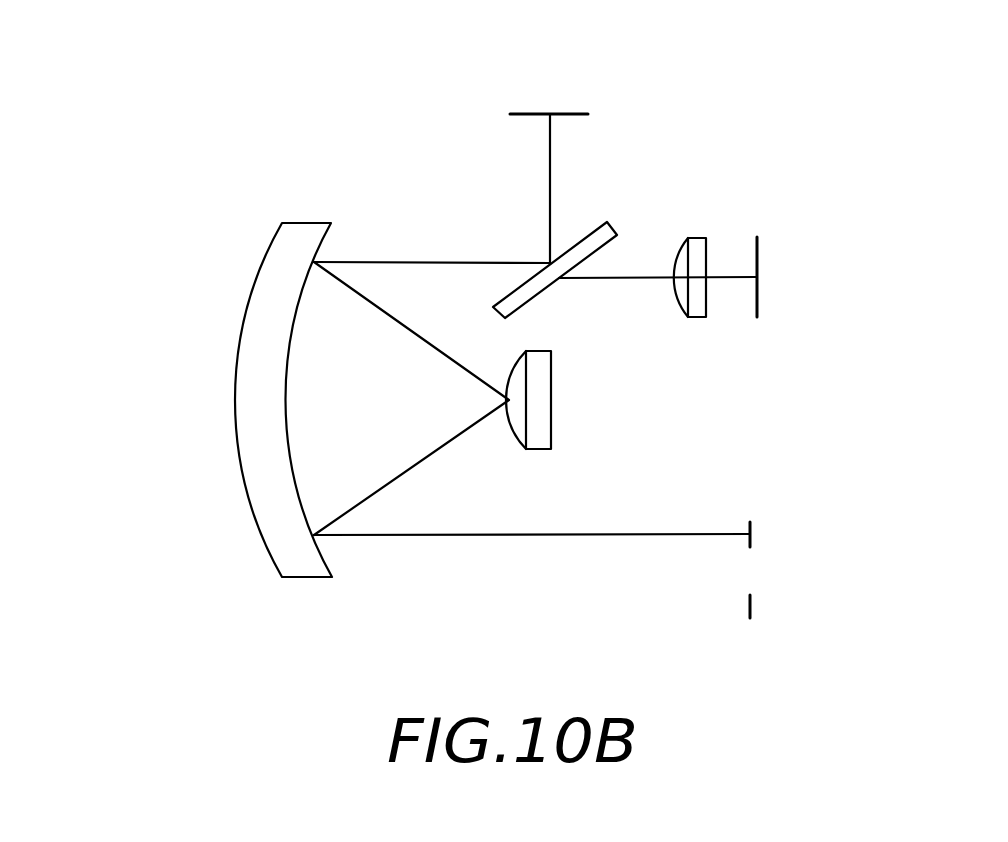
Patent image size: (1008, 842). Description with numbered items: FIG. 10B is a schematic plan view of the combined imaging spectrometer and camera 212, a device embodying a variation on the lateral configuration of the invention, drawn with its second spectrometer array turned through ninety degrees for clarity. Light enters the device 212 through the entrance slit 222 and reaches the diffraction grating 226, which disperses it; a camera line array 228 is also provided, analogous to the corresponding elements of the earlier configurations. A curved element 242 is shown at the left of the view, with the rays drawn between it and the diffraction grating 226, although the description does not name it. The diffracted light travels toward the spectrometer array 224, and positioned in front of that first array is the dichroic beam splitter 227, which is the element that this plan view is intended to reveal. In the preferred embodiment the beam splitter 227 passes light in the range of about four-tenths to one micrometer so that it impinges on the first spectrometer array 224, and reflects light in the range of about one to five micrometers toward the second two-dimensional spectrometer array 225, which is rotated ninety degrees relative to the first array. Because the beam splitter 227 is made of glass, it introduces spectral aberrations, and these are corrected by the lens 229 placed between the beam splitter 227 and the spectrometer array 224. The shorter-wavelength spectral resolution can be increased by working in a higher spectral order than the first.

The combined imaging spectrometer and camera 212 is at (184, 198).
The curved mirror 242 is at (235, 394).
The second two-dimensional spectrometer array 225 is at (563, 113).
The dichroic beam splitter 227 is at (540, 292).
The lens 229 is at (706, 254).
The spectrometer array 224 is at (760, 259).
The diffraction grating 226 is at (518, 433).
The entrance slit 222 is at (752, 531).
The camera line array 228 is at (752, 603).